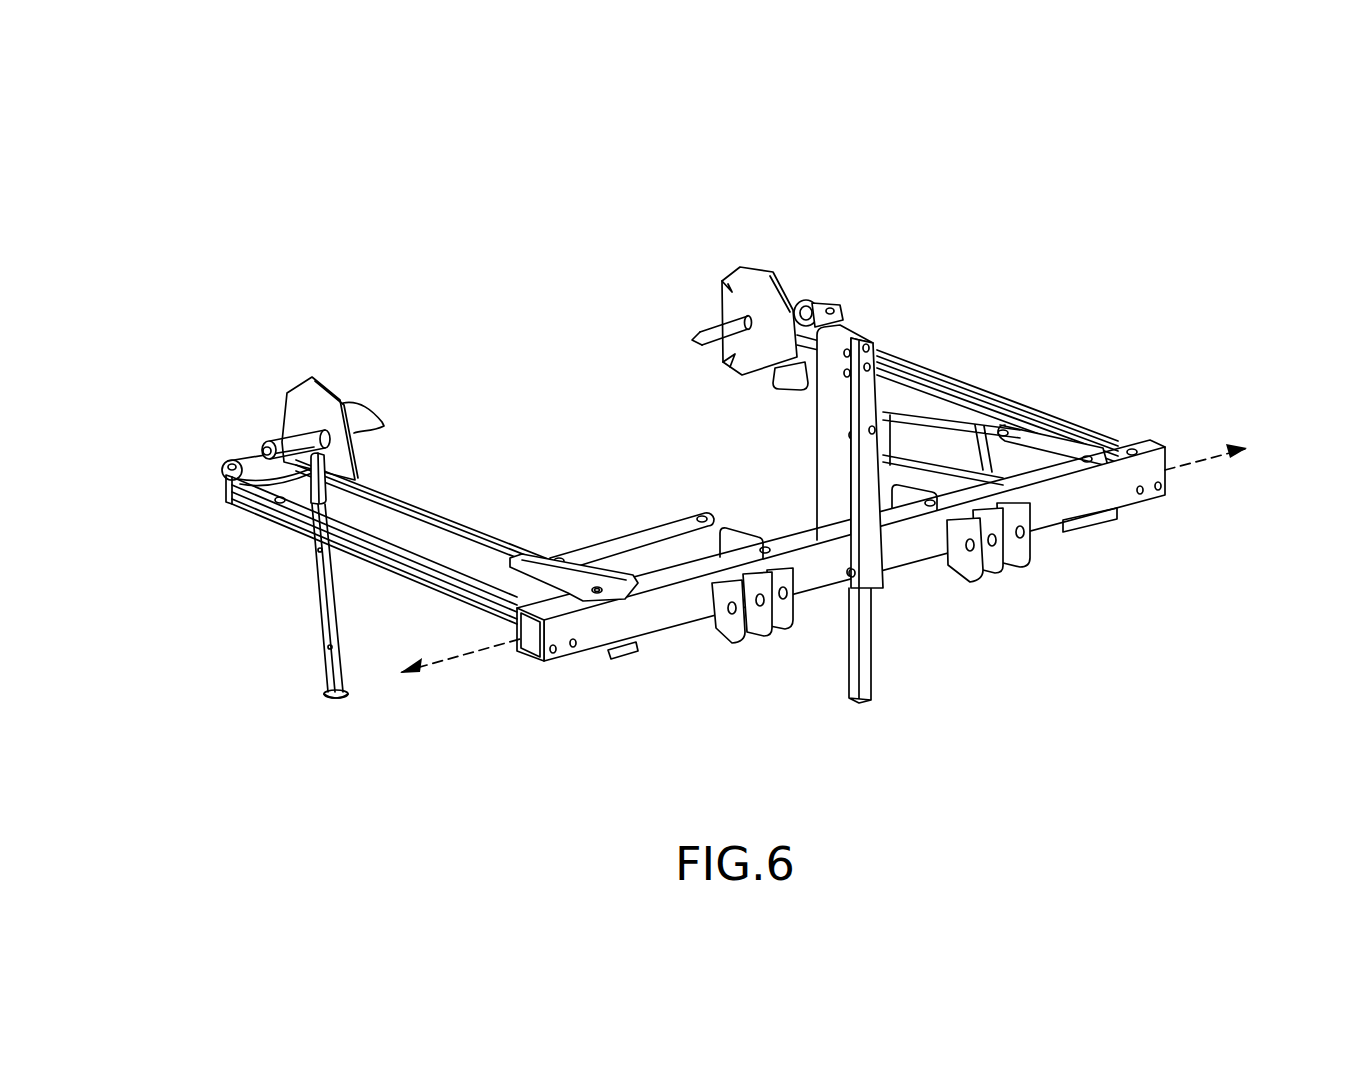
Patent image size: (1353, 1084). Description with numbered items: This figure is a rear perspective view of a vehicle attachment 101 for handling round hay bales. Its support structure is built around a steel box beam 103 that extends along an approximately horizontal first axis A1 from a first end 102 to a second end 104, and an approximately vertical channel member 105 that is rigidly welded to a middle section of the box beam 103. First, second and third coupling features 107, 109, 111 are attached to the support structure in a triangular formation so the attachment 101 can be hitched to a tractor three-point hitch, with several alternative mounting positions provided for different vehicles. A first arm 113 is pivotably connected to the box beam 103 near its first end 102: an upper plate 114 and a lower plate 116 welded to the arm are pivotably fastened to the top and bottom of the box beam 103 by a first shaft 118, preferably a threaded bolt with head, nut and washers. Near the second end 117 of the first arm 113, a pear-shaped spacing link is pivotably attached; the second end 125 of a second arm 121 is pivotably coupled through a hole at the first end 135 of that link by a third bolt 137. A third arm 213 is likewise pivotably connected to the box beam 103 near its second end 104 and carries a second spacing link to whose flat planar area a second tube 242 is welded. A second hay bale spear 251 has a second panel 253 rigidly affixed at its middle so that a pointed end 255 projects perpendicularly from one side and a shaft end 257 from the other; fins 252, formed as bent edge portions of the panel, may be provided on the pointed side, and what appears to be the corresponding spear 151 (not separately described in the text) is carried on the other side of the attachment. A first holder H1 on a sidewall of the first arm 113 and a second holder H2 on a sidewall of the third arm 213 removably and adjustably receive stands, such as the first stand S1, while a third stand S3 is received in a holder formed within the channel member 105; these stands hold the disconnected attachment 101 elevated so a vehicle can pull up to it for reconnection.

The vehicle attachment 101 is at (392, 203).
The first end 102 is at (526, 660).
The box beam 103 is at (815, 578).
The second end 104 is at (1171, 478).
The channel member 105 is at (832, 490).
The first coupling feature 107 is at (777, 644).
The second coupling feature 109 is at (1014, 575).
The third coupling feature 111 is at (875, 417).
The first arm 113 is at (436, 552).
The upper plate 114 is at (592, 568).
The lower plate 116 is at (621, 650).
The second end 117 is at (276, 505).
The first shaft 118 is at (604, 591).
The second arm 121 is at (378, 558).
The second end 125 is at (224, 492).
The first end 135 is at (225, 470).
The third bolt 137 is at (232, 457).
The first coupler 151 is at (349, 386).
The third arm 213 is at (803, 370).
The second tube 242 is at (800, 307).
The second hay bale spear 251 is at (695, 308).
The plurality of fins 252 is at (720, 284).
The second panel 253 is at (752, 285).
The pointed end 255 is at (700, 346).
The shaft end 257 is at (826, 305).
The first axis A1 is at (460, 652).
The first holder H1 is at (328, 504).
The second holder H2 is at (882, 573).
The first adjustable height stand S1 is at (333, 615).
The third adjustable height stand S3 is at (870, 653).